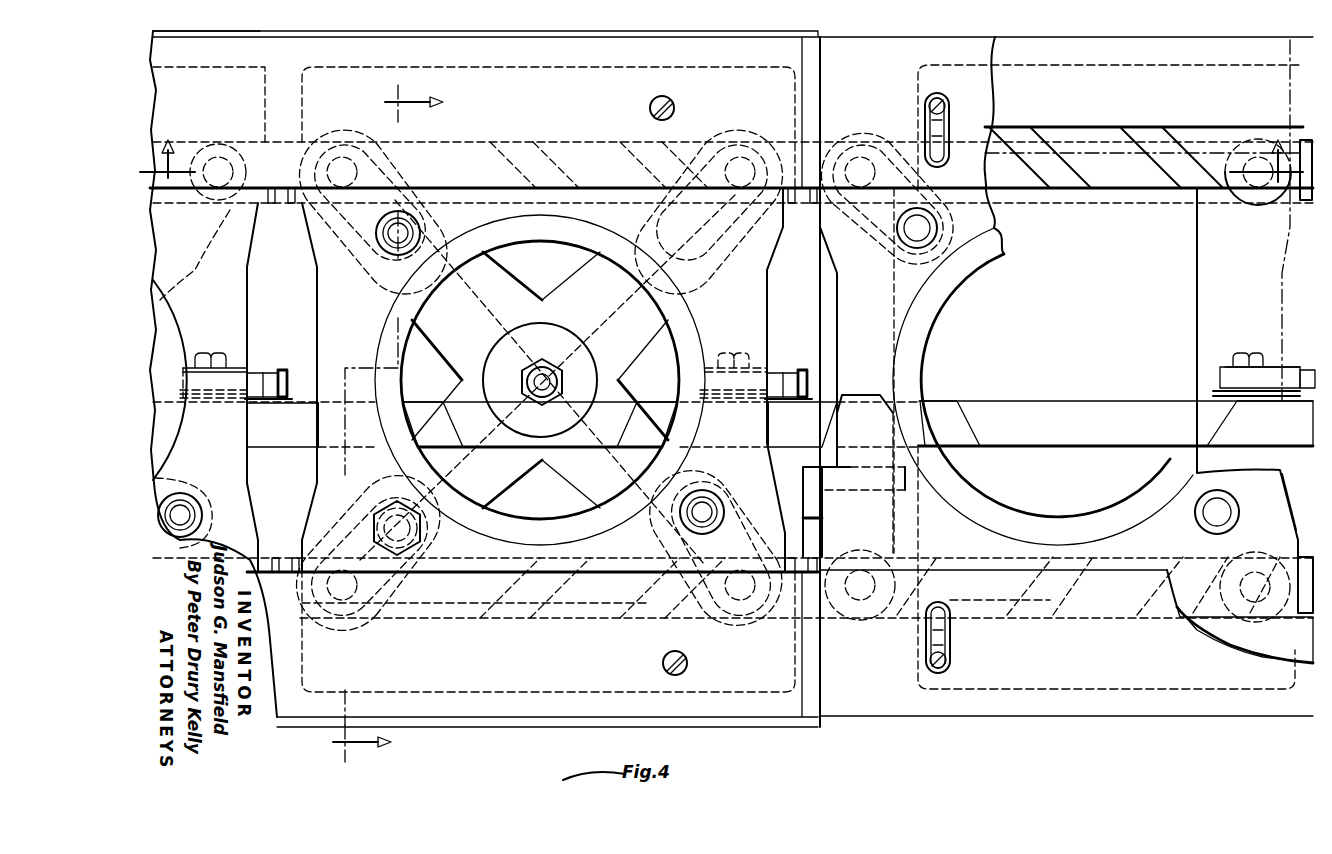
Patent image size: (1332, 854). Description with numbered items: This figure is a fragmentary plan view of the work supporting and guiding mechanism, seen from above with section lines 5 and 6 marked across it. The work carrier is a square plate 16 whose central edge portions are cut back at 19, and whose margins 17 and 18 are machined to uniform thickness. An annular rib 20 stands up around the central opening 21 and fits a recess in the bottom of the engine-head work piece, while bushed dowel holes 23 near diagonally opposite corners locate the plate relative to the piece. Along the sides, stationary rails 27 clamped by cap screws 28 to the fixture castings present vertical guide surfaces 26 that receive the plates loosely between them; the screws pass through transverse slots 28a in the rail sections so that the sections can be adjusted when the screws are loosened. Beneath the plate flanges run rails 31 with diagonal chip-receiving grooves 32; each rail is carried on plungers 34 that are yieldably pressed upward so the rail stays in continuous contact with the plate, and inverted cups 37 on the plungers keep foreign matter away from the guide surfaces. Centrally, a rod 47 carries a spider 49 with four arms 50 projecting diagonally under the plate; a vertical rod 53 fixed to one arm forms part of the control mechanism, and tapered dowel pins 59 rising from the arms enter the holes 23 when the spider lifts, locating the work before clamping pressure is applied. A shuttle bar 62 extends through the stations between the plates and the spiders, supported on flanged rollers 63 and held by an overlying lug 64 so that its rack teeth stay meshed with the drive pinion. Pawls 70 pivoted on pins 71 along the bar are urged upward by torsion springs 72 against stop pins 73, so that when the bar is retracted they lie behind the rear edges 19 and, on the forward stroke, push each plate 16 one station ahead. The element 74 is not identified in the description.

The section line 5- 5 is at (721, 220).
The section line 6- 6 is at (379, 423).
The carrier plate 16 is at (752, 322).
The margin 17 is at (1185, 622).
The margin 18 is at (784, 218).
The cut-back edge 19 is at (768, 287).
The annular rib 20 is at (600, 240).
The central opening 21 is at (565, 250).
The bushed dowel hole 23 is at (385, 233).
The vertical guide surface 26 is at (1222, 615).
The rail 27 is at (988, 110).
The screw 28 is at (675, 108).
The transverse slot 28a is at (930, 130).
The rail 31 is at (478, 562).
The chip-receiving groove 32 is at (632, 615).
The plunger 34 is at (226, 150).
The inverted cup 37 is at (1258, 208).
The rod 47 is at (530, 382).
The spider 49 is at (525, 338).
The spider arm 50 is at (224, 212).
The vertical rod 53 is at (404, 508).
The dowel pin 59 is at (398, 245).
The bar 62 is at (985, 408).
The flanged roller 63 is at (835, 400).
The lug 64 is at (812, 462).
The pawl 70 is at (258, 373).
The pin 71 is at (218, 353).
The torsion spring 72 is at (210, 398).
The stop pin 73 is at (290, 392).
The clamp bar 74 is at (283, 371).